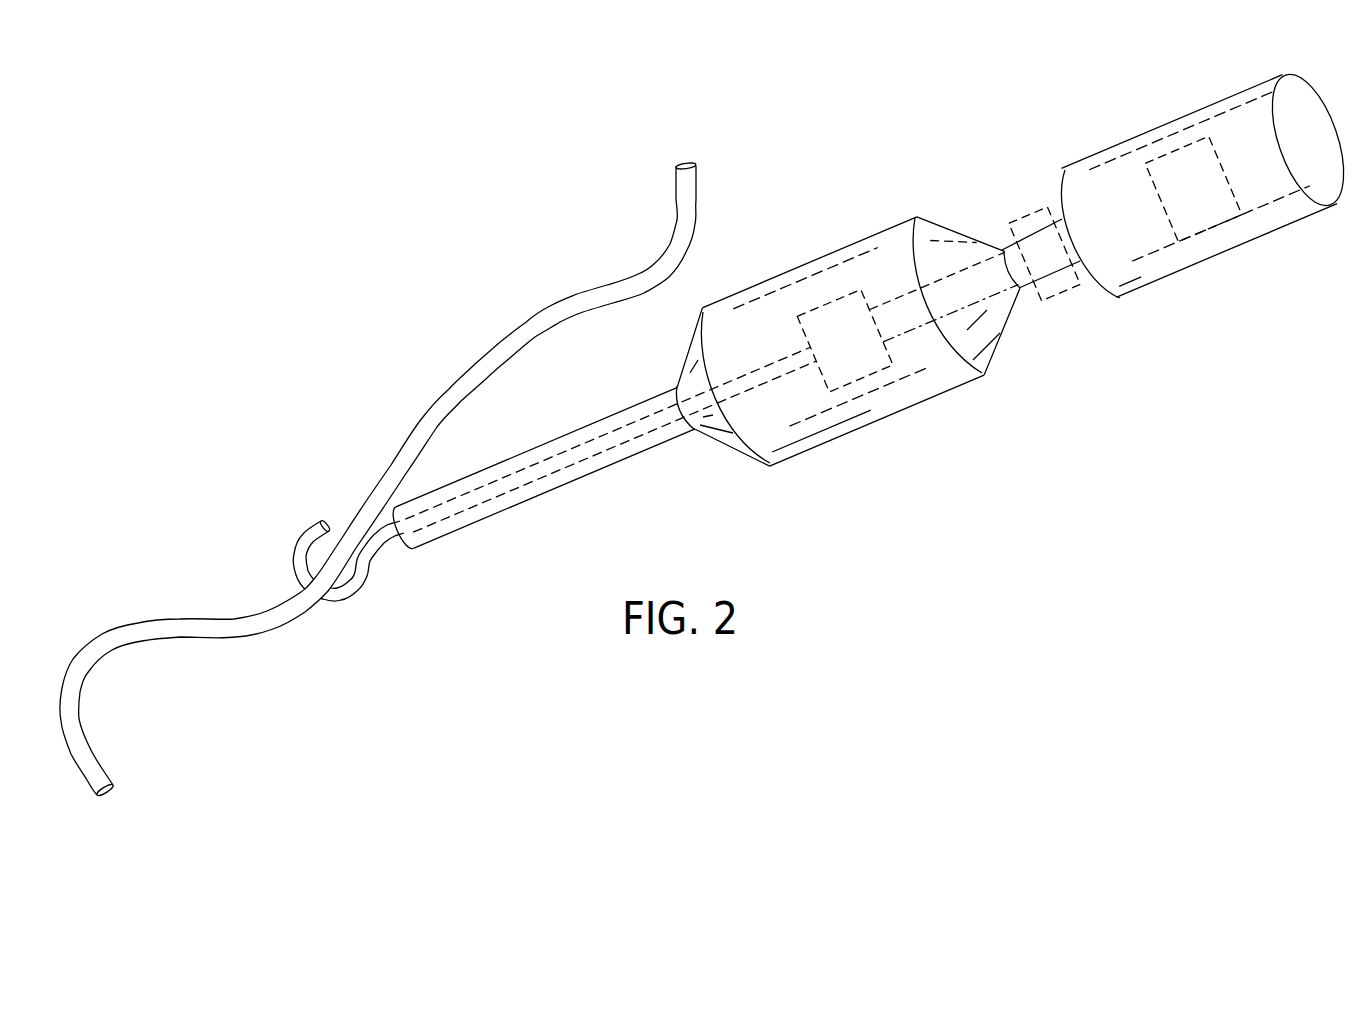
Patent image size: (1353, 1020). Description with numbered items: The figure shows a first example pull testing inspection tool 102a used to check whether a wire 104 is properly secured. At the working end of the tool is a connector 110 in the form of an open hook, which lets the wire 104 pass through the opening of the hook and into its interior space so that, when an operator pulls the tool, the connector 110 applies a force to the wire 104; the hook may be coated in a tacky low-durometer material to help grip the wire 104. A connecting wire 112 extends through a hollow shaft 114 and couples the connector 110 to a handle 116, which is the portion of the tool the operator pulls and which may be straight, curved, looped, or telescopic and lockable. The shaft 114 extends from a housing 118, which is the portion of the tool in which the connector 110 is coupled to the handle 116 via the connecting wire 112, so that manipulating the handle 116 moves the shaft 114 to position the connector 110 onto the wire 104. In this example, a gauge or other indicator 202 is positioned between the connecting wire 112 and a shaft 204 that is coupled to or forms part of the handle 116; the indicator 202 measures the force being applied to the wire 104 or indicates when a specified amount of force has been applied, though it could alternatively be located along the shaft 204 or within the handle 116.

The pull testing inspection tool 102a is at (778, 157).
The wire 104 is at (483, 354).
The connector 110 is at (312, 526).
The connecting wire 112 is at (494, 502).
The hollow shaft 114 is at (570, 484).
The handle 116 is at (1287, 223).
The housing 118 is at (950, 387).
The indicator 202 is at (860, 392).
The shaft 204 is at (947, 267).